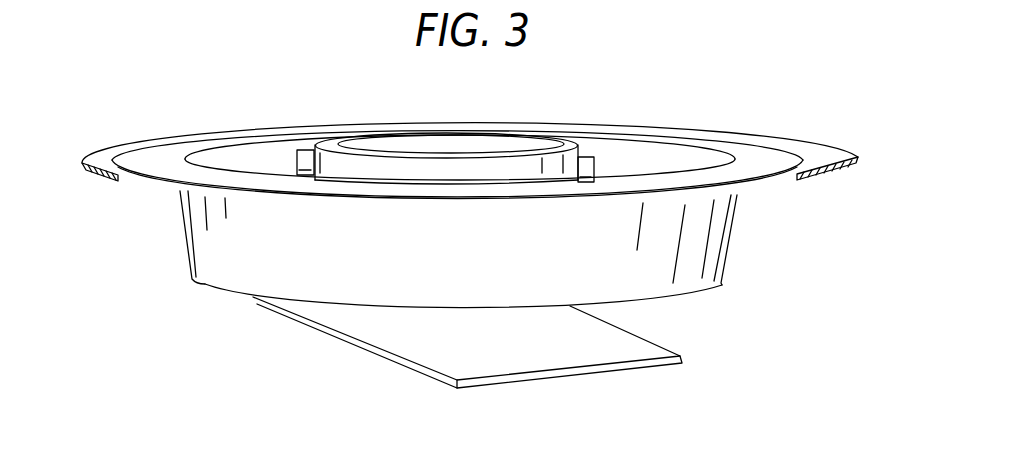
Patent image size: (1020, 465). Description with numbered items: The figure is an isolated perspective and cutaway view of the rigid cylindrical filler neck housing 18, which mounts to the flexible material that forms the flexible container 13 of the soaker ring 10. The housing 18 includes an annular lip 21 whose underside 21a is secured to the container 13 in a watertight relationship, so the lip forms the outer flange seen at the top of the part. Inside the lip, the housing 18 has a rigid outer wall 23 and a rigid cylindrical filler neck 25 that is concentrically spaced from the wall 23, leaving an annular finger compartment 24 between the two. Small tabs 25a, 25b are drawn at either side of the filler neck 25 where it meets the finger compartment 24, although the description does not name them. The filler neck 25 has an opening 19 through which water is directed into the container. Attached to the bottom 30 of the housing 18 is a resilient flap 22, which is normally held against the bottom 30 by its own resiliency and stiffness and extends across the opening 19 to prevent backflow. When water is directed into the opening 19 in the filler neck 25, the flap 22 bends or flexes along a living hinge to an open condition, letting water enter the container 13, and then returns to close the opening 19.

The soaker ring 10 is at (811, 148).
The flexible container 13 is at (826, 175).
The filler neck housing 18 is at (172, 99).
The opening 19 is at (452, 146).
The annular lip 21 is at (737, 150).
The underside 21a is at (767, 185).
The resilient flap 22 is at (630, 362).
The rigid outer wall 23 is at (210, 260).
The annular finger compartment 24 is at (268, 160).
The filler neck 25 is at (578, 144).
The retaining tab 25a is at (303, 150).
The retaining tab 25b is at (590, 156).
The bottom 30 is at (707, 288).